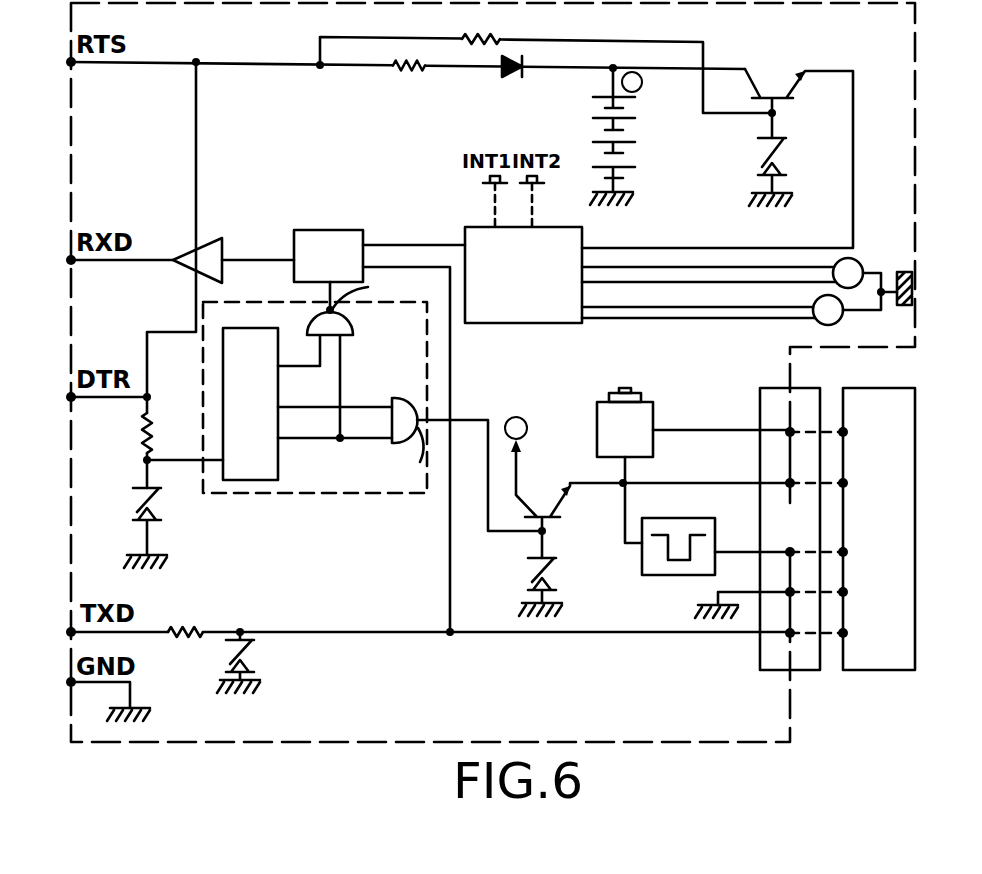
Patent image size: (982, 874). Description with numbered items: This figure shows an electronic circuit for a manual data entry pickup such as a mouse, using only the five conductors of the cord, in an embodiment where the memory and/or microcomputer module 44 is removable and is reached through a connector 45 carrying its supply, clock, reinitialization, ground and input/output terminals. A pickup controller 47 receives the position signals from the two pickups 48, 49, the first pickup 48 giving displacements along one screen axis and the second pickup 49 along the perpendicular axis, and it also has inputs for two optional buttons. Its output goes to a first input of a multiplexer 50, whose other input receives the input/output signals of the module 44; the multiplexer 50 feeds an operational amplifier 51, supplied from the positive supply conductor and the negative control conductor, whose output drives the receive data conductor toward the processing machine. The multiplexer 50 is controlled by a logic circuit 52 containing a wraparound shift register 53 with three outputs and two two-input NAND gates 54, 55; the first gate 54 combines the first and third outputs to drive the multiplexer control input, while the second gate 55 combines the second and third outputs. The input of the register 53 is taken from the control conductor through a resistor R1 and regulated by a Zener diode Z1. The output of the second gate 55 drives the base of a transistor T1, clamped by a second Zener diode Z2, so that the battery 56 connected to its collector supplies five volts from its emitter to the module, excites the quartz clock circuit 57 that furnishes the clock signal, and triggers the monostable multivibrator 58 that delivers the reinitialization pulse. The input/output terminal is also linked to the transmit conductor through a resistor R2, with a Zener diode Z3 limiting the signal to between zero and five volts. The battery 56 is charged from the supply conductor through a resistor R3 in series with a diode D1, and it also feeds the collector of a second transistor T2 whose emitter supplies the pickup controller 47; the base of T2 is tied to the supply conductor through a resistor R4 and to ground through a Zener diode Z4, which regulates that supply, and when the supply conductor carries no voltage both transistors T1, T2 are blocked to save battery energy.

The memory and/or microcomputer module 44 is at (893, 507).
The connector 45 is at (800, 662).
The pickup controller 47 is at (552, 324).
The pickup 48 is at (859, 262).
The pickup 49 is at (842, 320).
The multiplexer 50 is at (331, 230).
The operational amplifier 51 is at (212, 240).
The logic circuit 52 is at (381, 494).
The wraparound shift register 53 is at (256, 481).
The first logic gate 54 is at (350, 319).
The second logic gate 55 is at (398, 398).
The battery 56 is at (641, 149).
The clock circuit 57 is at (651, 418).
The monostable multivibrator 58 is at (655, 572).
The resistor R1 is at (141, 425).
The resistor R2 is at (181, 626).
The resistor R3 is at (416, 72).
The resistor R4 is at (483, 36).
The diode D1 is at (504, 74).
The Zener diode Z1 is at (156, 510).
The second Zener diode Z2 is at (549, 580).
The Zener diode Z3 is at (250, 664).
The Zener diode Z4 is at (786, 154).
The transistor T1 is at (548, 498).
The second transistor T2 is at (775, 78).